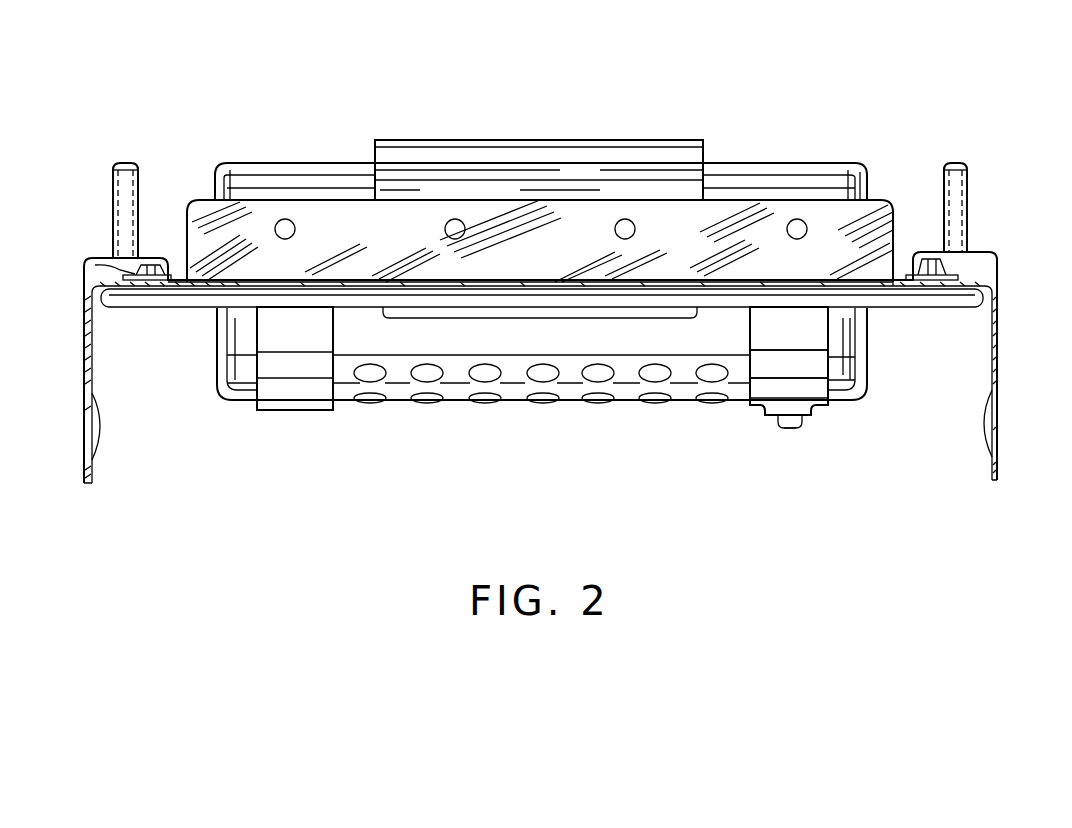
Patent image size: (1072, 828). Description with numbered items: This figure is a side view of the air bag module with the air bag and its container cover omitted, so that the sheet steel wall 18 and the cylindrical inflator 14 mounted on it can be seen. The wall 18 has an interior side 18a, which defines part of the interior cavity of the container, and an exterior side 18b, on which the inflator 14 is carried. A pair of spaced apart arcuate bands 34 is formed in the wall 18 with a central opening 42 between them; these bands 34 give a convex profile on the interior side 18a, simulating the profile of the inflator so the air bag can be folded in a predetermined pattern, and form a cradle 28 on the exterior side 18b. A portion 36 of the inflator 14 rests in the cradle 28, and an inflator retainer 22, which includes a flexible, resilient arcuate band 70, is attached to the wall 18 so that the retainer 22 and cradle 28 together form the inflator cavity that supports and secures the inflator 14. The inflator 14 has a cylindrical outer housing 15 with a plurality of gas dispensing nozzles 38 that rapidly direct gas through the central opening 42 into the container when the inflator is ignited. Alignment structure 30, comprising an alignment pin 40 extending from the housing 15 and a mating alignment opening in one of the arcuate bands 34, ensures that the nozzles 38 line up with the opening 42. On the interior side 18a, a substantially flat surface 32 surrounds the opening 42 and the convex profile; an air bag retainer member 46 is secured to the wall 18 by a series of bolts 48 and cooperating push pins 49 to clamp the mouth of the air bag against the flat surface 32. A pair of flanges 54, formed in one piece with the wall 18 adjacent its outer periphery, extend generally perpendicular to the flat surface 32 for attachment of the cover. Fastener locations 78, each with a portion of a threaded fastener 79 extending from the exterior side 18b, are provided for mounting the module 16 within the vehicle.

The cylindrical inflator 14 is at (293, 175).
The cylindrical outer housing 15 is at (402, 390).
The lamp assembly 16 is at (888, 92).
The wall 18 is at (900, 280).
The interior side 18a is at (198, 287).
The exterior side 18b is at (182, 282).
The inflator retainer 22 is at (408, 140).
The cradle 28 is at (810, 372).
The alignment structure 30 is at (785, 426).
The substantially flat surface 32 is at (888, 290).
The arcuate bands 34 is at (770, 392).
The portion of the inflator 36 is at (250, 392).
The gas dispensing nozzles 38 is at (510, 380).
The alignment pin 40 is at (796, 428).
The central opening 42 is at (740, 342).
The air bag retainer member 46 is at (128, 298).
The bolts 48 is at (110, 264).
The push pins 49 is at (950, 264).
The flanges 54 is at (722, 232).
The arcuate band 70 is at (387, 150).
The fastener locations 78 is at (988, 213).
The threaded fastener 79 is at (968, 178).